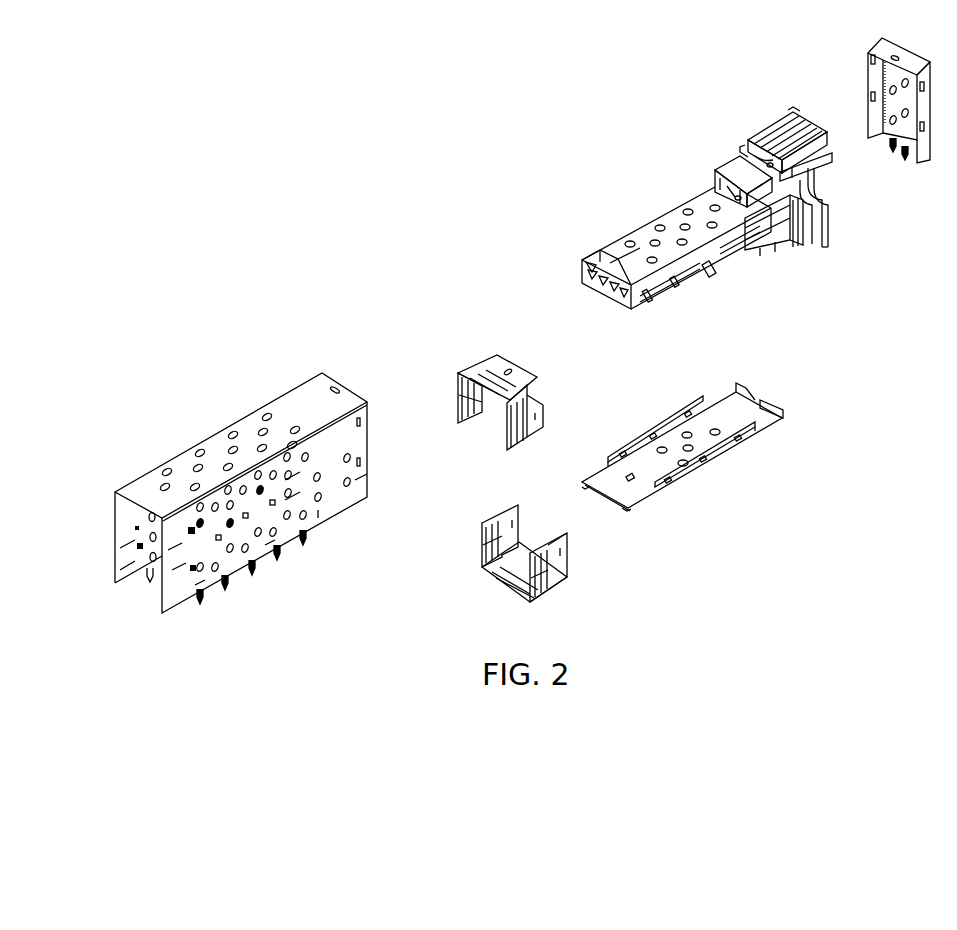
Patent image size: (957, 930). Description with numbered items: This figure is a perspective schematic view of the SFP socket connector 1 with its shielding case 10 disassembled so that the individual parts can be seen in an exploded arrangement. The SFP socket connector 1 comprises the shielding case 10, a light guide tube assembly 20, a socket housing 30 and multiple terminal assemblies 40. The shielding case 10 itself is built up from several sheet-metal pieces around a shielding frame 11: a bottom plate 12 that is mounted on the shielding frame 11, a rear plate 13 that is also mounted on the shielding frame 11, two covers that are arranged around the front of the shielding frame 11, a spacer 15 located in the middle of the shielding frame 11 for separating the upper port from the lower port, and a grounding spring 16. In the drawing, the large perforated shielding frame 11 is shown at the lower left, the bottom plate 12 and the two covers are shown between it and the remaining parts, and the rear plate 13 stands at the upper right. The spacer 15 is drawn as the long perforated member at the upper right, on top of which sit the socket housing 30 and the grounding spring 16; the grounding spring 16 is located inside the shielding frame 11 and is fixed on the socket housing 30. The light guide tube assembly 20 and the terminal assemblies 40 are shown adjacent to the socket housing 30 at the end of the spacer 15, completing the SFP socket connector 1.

The SFP socket connector 1 is at (464, 136).
The shielding case 10 is at (270, 377).
The shielding frame 11 is at (218, 447).
The bottom plate 12 is at (728, 412).
The rear plate 13 is at (905, 128).
The spacer 15 is at (642, 242).
The grounding spring 16 is at (803, 157).
The light guide tube assembly 20 is at (775, 218).
The socket housing 30 is at (730, 160).
The terminal assemblies 40 is at (820, 184).